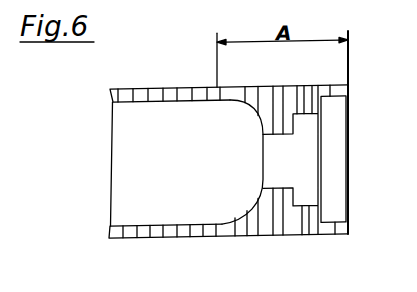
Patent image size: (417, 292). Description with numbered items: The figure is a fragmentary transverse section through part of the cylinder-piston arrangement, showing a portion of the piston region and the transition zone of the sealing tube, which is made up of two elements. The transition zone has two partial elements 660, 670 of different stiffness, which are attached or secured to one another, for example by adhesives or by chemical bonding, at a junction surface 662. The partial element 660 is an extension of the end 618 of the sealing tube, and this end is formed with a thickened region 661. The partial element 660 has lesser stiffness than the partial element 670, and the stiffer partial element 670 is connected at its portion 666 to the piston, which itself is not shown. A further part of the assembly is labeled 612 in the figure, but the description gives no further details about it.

The end of the sealing tube 618 is at (157, 87).
The junction surface 662 is at (262, 144).
The thickened region 661 is at (263, 214).
The partial element 660 is at (290, 236).
The shoulder 612 is at (308, 207).
The partial element 670 is at (308, 136).
The portion 666 is at (348, 164).